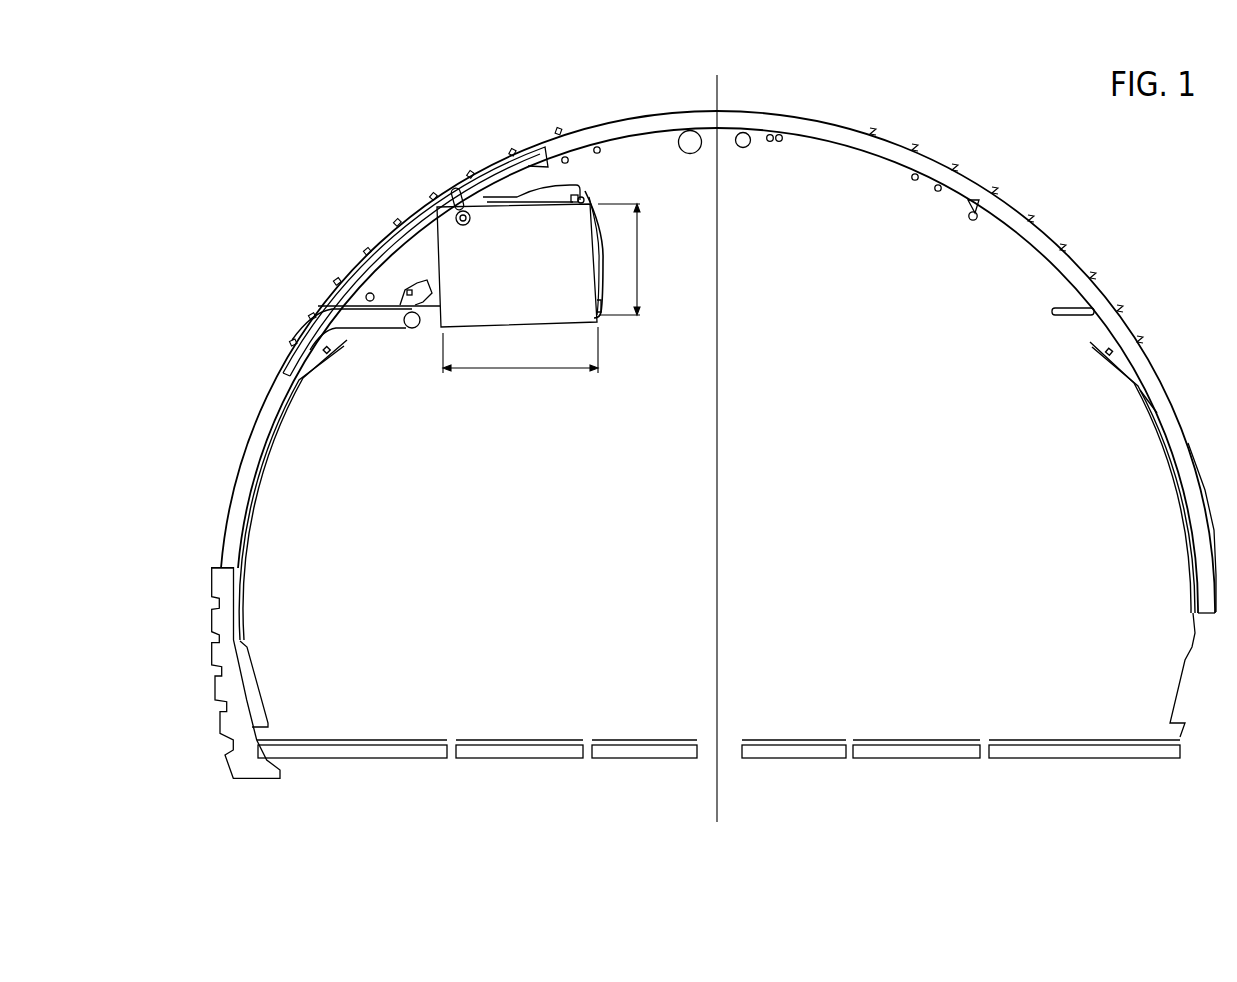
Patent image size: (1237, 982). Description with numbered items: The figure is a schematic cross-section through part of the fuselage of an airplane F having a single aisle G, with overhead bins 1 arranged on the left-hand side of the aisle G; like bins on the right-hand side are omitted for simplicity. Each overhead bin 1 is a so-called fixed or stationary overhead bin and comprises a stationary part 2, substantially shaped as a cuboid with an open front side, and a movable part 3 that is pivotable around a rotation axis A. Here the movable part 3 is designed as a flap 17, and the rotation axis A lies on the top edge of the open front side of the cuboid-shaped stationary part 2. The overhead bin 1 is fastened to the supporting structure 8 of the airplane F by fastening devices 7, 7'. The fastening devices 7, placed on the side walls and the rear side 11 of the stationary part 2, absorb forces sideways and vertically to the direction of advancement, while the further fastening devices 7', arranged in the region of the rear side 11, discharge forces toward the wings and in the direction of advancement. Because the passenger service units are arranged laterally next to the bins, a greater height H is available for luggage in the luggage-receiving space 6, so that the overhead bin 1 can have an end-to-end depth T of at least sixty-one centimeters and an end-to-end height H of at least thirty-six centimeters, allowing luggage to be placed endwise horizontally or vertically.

The overhead bin 1 is at (470, 260).
The stationary part 2 is at (582, 317).
The movable part 3 is at (598, 230).
The luggage-receiving space 6 is at (513, 270).
The fastening device 7 is at (429, 156).
The further fastening device 7' is at (321, 253).
The supporting structure 8 is at (278, 355).
The rear side 11 is at (417, 284).
The flap 17 is at (636, 172).
The rotation axis A is at (583, 197).
The airplane F is at (937, 168).
The aisle G is at (738, 448).
The end-to-end height H is at (619, 259).
The end-to-end depth T is at (520, 350).